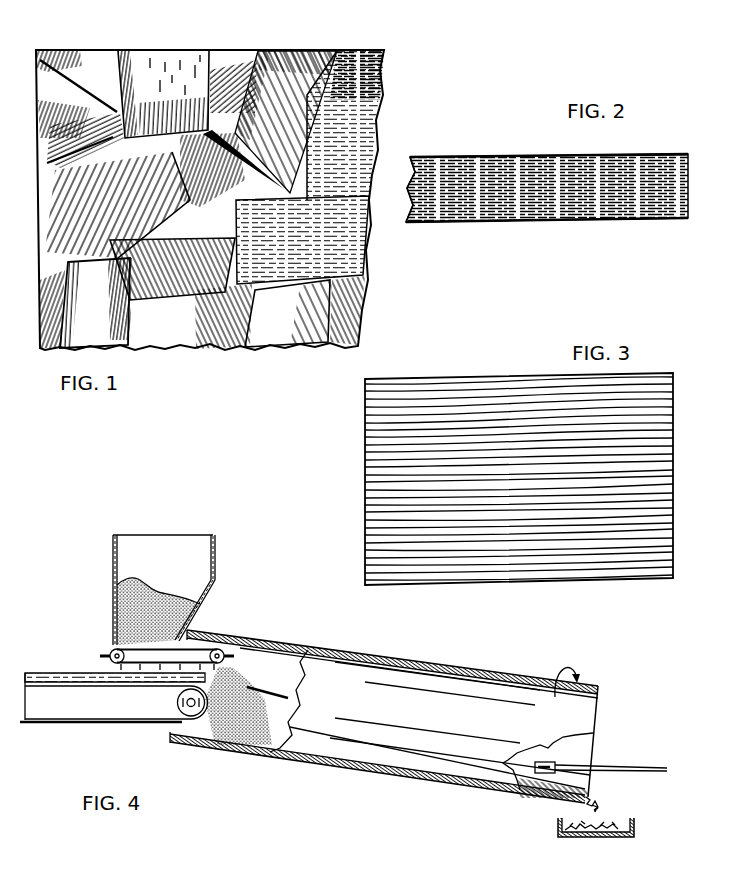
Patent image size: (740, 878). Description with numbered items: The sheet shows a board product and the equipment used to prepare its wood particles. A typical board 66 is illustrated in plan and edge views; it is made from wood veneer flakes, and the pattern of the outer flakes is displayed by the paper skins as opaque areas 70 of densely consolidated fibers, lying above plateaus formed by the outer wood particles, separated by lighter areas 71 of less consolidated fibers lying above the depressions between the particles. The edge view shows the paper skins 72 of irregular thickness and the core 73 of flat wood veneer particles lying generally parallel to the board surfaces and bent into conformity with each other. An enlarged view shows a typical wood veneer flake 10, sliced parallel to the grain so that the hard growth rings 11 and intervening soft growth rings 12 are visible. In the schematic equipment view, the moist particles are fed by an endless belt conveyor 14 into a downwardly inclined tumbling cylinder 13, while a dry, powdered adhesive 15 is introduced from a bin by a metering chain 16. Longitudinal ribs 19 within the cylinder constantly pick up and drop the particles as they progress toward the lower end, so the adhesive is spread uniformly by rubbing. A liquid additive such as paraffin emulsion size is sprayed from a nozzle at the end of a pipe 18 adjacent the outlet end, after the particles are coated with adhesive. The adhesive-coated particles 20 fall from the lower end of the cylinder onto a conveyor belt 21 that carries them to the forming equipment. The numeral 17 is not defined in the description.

In FIG. 1, the board 66 is at (133, 48).
In FIG. 2, the board 66 is at (502, 153).
In FIG. 1, the opaque areas 70 is at (205, 287).
In FIG. 1, the lighter areas 71 is at (83, 172).
In FIG. 2, the paper skins 72 is at (614, 157).
In FIG. 2, the core 73 is at (415, 190).
In FIG. 3, the wood veneer flake 10 is at (493, 466).
In FIG. 4, the wood veneer flake 10 is at (68, 676).
In FIG. 3, the hard growth rings 11 is at (372, 496).
In FIG. 3, the soft growth rings 12 is at (372, 458).
In FIG. 4, the tumbling cylinder 13 is at (415, 663).
In FIG. 4, the endless belt conveyor 14 is at (83, 688).
In FIG. 4, the dry, powdered adhesive 15 is at (168, 600).
In FIG. 4, the metering chain 16 is at (113, 650).
In FIG. 4, the chute bottom wall 17 is at (193, 745).
In FIG. 4, the pipe 18 is at (638, 764).
In FIG. 4, the longitudinal ribs 19 is at (290, 690).
In FIG. 4, the adhesive-coated particles 20 is at (600, 805).
In FIG. 4, the conveyor belt 21 is at (578, 836).